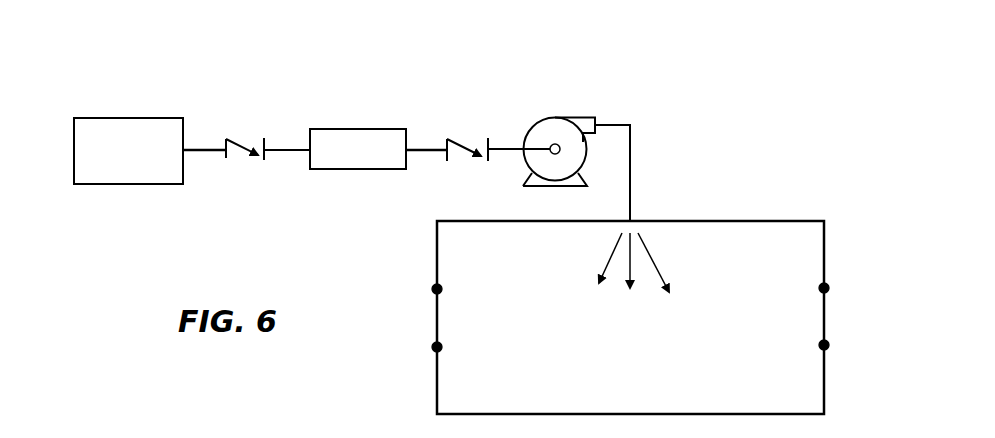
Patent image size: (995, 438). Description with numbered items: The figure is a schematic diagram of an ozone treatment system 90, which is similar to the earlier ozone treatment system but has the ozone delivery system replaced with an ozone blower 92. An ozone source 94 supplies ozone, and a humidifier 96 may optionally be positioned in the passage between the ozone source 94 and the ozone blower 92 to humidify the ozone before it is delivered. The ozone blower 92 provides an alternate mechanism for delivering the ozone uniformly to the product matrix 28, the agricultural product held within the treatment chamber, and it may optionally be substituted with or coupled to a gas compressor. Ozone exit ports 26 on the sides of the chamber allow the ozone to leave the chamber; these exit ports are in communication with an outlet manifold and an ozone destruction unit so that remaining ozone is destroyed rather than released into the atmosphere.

The ozone source 94 is at (97, 118).
The humidifier 96 is at (359, 129).
The ozone blower 92 is at (555, 117).
The ozone treatment system 90 is at (733, 110).
The product matrix 28 is at (648, 364).
The ozone exit port 26 is at (437, 347).